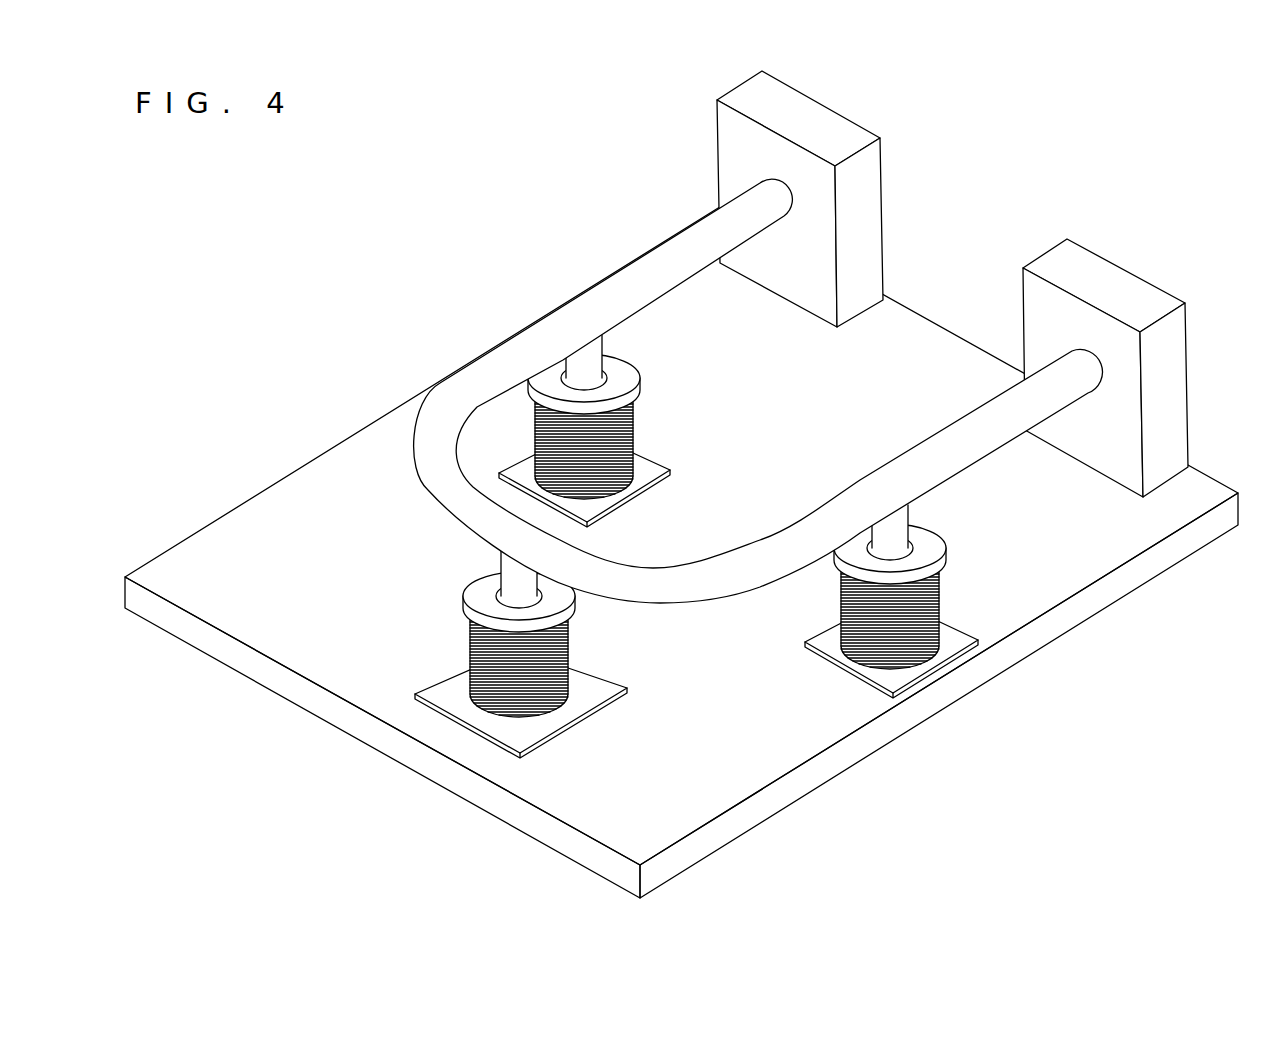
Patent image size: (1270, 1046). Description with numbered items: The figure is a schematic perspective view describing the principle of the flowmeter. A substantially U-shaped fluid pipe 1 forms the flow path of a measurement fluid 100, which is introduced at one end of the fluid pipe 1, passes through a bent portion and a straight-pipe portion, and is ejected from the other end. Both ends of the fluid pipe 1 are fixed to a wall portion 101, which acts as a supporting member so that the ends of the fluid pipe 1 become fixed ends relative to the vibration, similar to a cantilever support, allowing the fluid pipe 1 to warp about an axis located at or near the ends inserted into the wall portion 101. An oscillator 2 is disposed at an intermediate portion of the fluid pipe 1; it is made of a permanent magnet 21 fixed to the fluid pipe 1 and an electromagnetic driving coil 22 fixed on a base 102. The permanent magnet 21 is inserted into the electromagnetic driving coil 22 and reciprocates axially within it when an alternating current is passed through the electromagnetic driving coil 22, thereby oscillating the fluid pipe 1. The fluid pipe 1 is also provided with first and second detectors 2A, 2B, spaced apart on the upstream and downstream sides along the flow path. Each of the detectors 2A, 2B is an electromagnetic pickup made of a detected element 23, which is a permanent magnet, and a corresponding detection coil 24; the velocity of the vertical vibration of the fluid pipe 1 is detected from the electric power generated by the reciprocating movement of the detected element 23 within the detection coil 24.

The fluid pipe 1 is at (735, 606).
The oscillator 2 is at (477, 649).
The first detector 2A is at (718, 368).
The second detector 2B is at (1025, 538).
The permanent magnet 21 is at (507, 590).
The electromagnetic driving coil 22 is at (470, 672).
The detected element 23 is at (590, 373).
The detection coil 24 is at (635, 443).
The measurement fluid 100 is at (683, 484).
The wall portion 101 is at (862, 216).
The base 102 is at (375, 700).